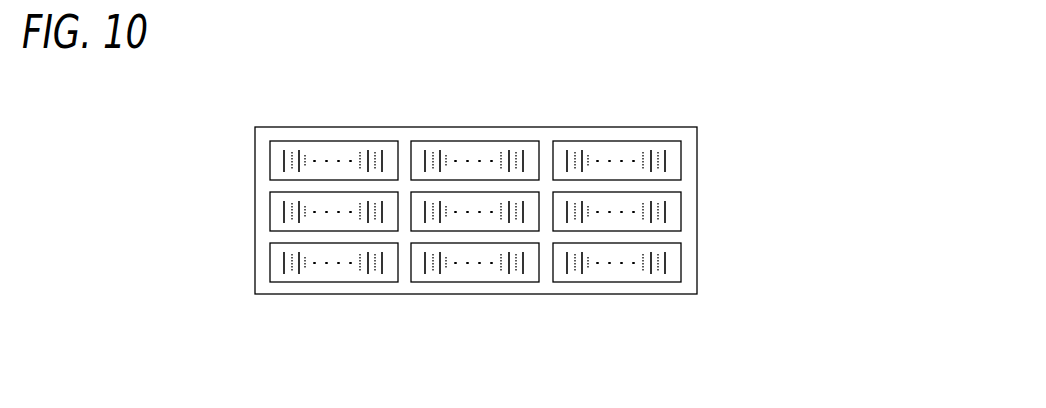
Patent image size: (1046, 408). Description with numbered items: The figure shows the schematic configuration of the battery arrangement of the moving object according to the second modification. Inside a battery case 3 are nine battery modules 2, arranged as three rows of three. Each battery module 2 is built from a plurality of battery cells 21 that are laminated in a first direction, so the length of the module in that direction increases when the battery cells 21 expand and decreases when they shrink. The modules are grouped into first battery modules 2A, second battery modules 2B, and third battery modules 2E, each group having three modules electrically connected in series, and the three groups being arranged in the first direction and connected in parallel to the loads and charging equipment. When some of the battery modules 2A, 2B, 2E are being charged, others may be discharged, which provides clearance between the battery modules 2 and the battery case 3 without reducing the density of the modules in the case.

The battery modules 2 is at (458, 214).
The battery case 3 is at (540, 294).
The battery cells 21 is at (300, 166).
The first battery modules 2A is at (603, 163).
The second battery modules 2B is at (301, 253).
The third battery modules 2E is at (459, 163).